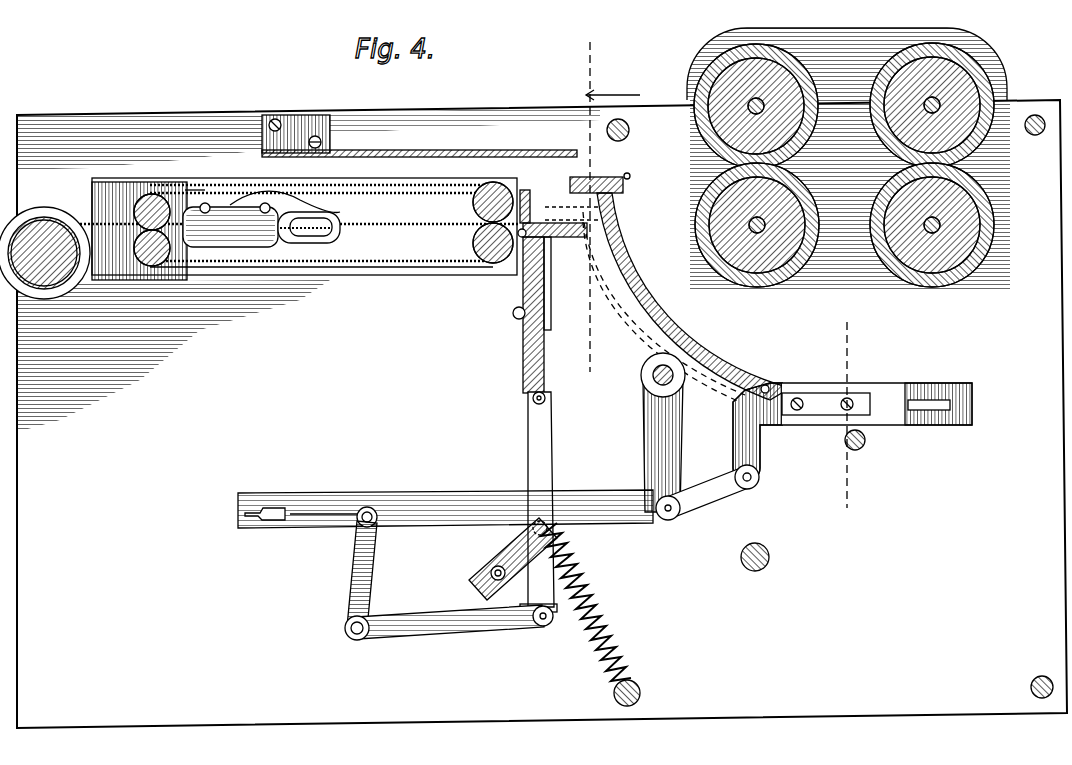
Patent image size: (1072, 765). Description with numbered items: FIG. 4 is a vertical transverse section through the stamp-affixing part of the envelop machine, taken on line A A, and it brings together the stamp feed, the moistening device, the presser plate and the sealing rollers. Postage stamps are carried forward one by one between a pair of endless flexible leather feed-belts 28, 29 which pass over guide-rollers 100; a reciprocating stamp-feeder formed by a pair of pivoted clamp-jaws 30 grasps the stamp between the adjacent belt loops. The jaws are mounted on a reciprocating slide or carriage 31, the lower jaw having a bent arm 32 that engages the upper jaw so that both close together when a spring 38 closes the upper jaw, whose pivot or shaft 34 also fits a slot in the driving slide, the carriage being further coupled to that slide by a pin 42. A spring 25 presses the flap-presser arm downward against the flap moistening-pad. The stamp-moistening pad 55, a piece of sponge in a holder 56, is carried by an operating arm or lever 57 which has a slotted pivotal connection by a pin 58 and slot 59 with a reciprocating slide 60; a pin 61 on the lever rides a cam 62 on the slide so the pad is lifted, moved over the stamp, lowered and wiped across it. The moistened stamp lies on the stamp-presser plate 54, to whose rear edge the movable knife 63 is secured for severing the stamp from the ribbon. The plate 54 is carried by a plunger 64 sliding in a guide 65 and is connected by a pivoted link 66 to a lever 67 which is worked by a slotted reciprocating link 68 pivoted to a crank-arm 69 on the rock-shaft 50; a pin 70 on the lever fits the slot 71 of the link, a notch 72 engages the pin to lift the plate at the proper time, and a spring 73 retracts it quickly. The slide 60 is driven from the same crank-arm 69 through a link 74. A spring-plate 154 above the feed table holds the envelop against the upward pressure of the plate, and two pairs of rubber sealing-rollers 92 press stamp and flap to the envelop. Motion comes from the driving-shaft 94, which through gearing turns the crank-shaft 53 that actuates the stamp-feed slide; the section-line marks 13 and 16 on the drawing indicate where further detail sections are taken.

The section line 13 is at (609, 198).
The section line 16 is at (846, 415).
The spring 25 is at (58, 232).
The feed-belt 28 is at (172, 186).
The feed-belt 29 is at (232, 268).
The stamp-feeder clamp-jaw 30 is at (336, 212).
The reciprocating slide or carriage 31 is at (230, 227).
The bent arm 32 is at (292, 248).
The pivot or shaft 34 is at (258, 200).
The spring 38 is at (340, 200).
The pin 42 is at (195, 246).
The rock-shaft 50 is at (680, 372).
The crank-shaft 53 is at (856, 452).
The stamp-presser plate 54 is at (568, 238).
The stamp-moistening pad 55 is at (602, 180).
The holder 56 is at (631, 180).
The operating arm or lever 57 is at (642, 258).
The pin 58 is at (857, 400).
The slot 59 is at (802, 392).
The reciprocating slide 60 is at (890, 420).
The pin 61 is at (768, 386).
The cam 62 is at (526, 212).
The movable knife or cutter 63 is at (527, 228).
The reciprocating slide or plunger 64 is at (545, 370).
The guide 65 is at (552, 317).
The pivoted link 66 is at (546, 454).
The lever 67 is at (370, 572).
The slotted reciprocating link 68 is at (420, 500).
The crank-arm 69 is at (676, 462).
The pin 70 is at (372, 512).
The slot 71 is at (305, 512).
The notch 72 is at (266, 510).
The spring 73 is at (606, 618).
The link 74 is at (718, 496).
The sealing-rollers 92 is at (768, 80).
The driving-shaft 94 is at (770, 557).
The guide-rollers 100 is at (490, 194).
The spring-plate 154 is at (462, 150).